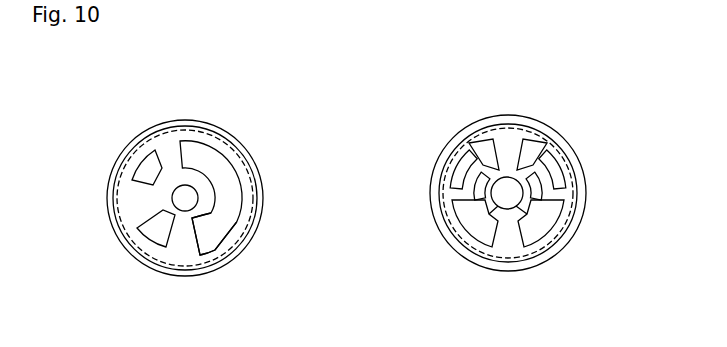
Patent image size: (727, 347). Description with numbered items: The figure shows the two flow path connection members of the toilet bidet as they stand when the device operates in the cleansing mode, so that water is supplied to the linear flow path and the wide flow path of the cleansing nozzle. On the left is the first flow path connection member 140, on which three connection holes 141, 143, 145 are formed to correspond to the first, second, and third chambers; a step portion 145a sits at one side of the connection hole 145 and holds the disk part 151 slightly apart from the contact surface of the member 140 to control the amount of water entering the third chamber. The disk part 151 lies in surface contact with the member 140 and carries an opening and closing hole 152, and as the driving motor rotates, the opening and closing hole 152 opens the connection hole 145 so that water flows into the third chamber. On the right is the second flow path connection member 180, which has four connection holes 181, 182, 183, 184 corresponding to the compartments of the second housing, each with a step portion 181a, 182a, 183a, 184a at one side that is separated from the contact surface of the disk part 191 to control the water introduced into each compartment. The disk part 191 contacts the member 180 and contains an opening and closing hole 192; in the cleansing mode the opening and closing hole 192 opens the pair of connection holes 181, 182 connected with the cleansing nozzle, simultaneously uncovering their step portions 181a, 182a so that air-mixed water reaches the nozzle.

The first flow path connection member 140 is at (188, 121).
The connection hole 141 is at (157, 235).
The connection hole 143 is at (140, 170).
The connection hole 145 is at (208, 235).
The step portion 145a is at (233, 187).
The disk part 151 is at (162, 135).
The opening and closing hole 152 is at (240, 232).
The second flow path connection member 180 is at (508, 271).
The connection hole 181 is at (540, 228).
The step portion 181a is at (545, 184).
The connection hole 182 is at (532, 150).
The step portion 182a is at (552, 162).
The connection hole 183 is at (480, 150).
The step portion 183a is at (460, 162).
The connection hole 184 is at (468, 222).
The step portion 184a is at (480, 182).
The disk part 191 is at (505, 124).
The opening and closing hole 192 is at (572, 201).